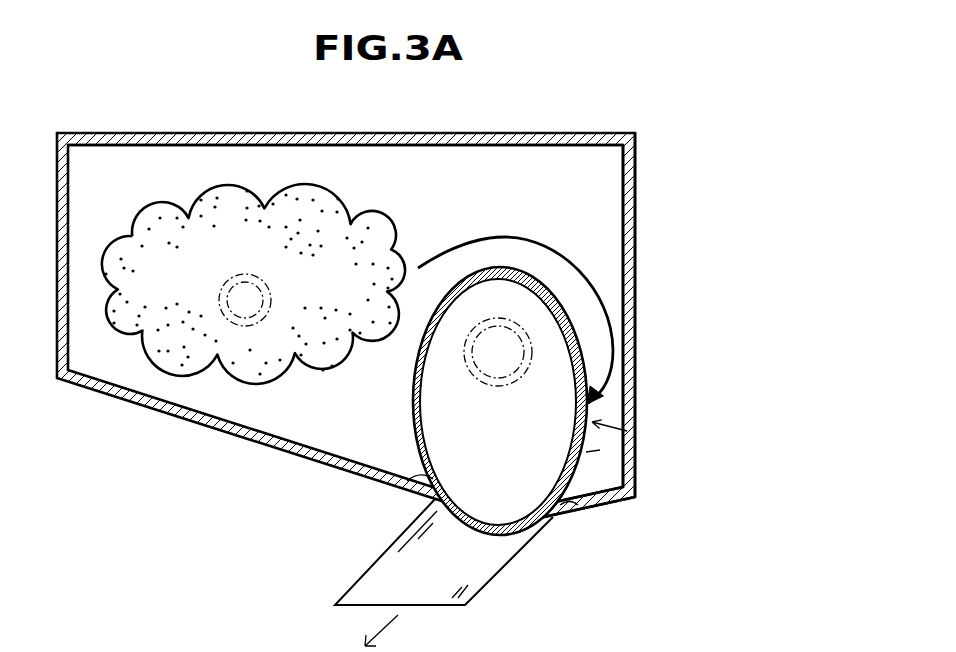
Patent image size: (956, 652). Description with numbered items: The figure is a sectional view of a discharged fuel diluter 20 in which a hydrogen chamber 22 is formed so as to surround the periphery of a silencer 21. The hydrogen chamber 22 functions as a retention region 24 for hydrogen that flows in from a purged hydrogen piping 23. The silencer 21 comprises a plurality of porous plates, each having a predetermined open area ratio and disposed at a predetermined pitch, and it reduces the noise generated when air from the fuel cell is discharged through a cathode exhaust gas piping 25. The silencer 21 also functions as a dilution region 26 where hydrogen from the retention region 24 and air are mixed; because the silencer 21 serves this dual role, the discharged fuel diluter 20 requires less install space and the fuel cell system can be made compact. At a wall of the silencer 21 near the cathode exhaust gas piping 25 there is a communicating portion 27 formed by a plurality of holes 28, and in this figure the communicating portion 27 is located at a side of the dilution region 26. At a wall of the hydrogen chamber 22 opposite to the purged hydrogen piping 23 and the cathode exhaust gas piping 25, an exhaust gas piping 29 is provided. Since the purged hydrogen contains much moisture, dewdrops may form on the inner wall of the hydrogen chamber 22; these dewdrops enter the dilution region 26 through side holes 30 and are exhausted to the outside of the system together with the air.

The discharged fuel diluter 20 is at (651, 165).
The silencer 21 is at (613, 500).
The hydrogen chamber 22 is at (630, 284).
The purged hydrogen piping 23 is at (242, 326).
The retention region 24 is at (480, 195).
The cathode exhaust gas piping 25 is at (492, 385).
The dilution region 26 is at (515, 473).
The communicating portion 27 is at (573, 442).
The holes 28 is at (563, 470).
The exhaust gas piping 29 is at (480, 552).
The side holes 30 is at (570, 512).